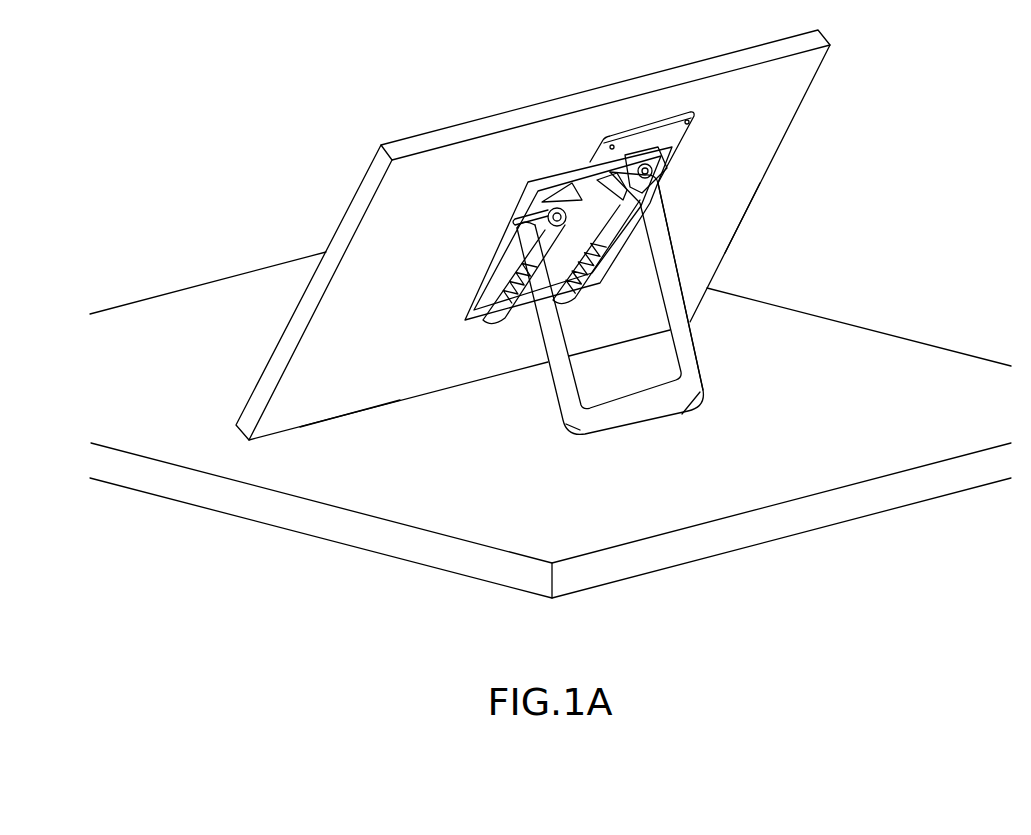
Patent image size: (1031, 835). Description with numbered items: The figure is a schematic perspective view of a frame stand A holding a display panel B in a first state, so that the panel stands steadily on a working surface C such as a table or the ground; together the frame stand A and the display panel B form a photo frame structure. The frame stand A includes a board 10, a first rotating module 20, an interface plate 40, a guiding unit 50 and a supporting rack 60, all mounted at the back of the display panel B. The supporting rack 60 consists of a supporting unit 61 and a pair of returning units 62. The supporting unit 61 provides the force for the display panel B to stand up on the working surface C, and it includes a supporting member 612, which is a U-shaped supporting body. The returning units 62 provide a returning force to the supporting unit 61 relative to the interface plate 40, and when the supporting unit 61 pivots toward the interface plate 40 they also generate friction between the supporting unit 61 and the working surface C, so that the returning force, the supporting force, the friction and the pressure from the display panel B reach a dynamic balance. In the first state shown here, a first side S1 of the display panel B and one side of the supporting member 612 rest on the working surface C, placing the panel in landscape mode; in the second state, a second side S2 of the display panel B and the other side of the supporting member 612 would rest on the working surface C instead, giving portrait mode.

The board 10 is at (651, 121).
The first rotating module 20 is at (658, 181).
The interface plate 40 is at (580, 175).
The guiding unit 50 is at (670, 168).
The supporting rack 60 is at (624, 339).
The supporting unit 61 is at (651, 322).
The supporting member 612 is at (693, 349).
The returning unit 62 is at (501, 322).
The frame stand A is at (620, 268).
The display panel B is at (476, 122).
The working surface C is at (206, 282).
The first side S1 is at (380, 408).
The second side S2 is at (737, 252).